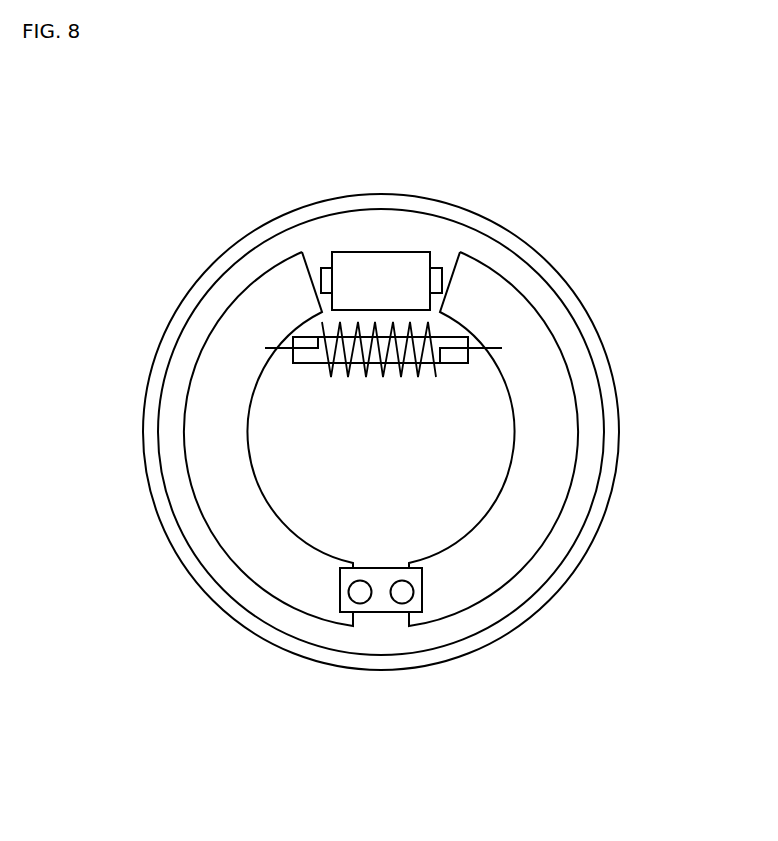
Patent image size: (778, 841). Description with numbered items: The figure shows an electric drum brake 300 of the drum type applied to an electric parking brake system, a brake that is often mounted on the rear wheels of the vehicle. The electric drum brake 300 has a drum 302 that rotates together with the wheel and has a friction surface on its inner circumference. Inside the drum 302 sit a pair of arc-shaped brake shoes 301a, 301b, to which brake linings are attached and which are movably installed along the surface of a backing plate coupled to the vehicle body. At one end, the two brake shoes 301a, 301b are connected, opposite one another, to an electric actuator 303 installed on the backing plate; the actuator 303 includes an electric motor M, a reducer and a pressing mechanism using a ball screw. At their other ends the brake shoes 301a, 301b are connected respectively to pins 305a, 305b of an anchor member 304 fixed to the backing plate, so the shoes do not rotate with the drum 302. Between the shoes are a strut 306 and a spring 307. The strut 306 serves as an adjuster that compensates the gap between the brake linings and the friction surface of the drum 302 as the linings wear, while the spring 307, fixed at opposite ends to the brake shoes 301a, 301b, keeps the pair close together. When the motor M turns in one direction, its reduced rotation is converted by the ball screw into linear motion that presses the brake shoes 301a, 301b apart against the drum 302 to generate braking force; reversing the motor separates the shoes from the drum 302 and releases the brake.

The electric drum brake 300 is at (478, 189).
The brake shoe 301a is at (212, 440).
The brake shoe 301b is at (552, 435).
The drum 302 is at (562, 573).
The electric actuator 303 is at (347, 257).
The anchor member 304 is at (382, 568).
The pin 305a is at (360, 600).
The pin 305b is at (402, 600).
The strut 306 is at (455, 363).
The spring 307 is at (382, 372).